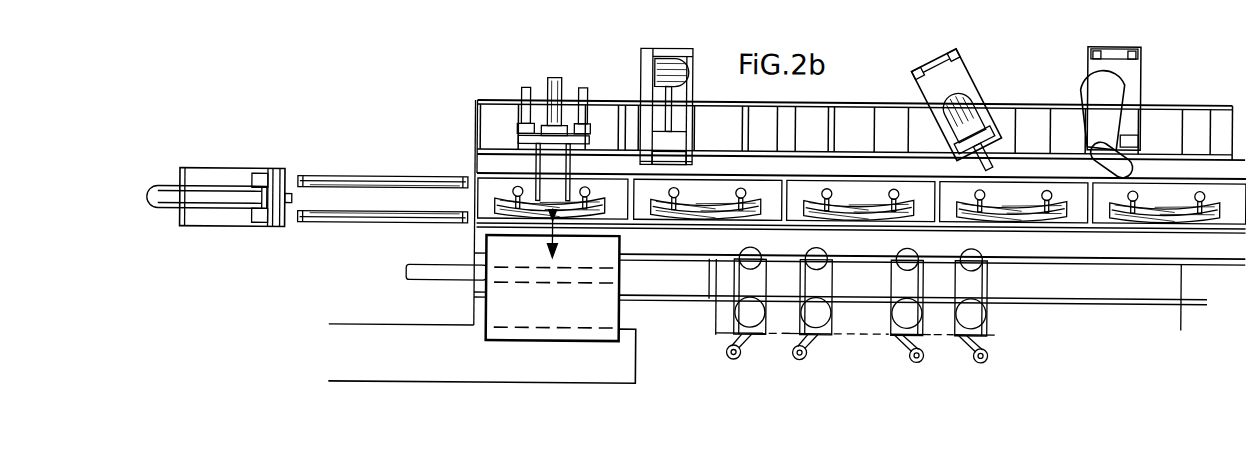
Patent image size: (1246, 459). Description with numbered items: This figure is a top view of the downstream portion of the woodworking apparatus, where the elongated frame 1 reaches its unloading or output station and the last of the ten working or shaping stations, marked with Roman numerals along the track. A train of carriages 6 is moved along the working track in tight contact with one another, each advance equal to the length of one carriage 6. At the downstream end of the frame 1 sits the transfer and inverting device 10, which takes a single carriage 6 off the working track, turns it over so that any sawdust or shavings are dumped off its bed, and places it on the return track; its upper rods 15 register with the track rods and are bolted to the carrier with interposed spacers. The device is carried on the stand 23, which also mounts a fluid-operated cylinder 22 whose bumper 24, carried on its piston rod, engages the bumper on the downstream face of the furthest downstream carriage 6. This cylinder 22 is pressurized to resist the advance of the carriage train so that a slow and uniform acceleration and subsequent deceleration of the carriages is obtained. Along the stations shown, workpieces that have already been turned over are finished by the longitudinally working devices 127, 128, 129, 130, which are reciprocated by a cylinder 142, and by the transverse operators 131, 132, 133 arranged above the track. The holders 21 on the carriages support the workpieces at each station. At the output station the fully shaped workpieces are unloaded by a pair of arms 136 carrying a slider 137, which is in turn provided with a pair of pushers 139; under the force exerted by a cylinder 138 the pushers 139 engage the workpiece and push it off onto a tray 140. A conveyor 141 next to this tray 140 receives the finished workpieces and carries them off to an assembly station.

The elongated frame 1 is at (753, 120).
The carriage 6 is at (849, 178).
The transfer and inverting device 10 is at (355, 197).
The upper rods 15 is at (402, 218).
The workpiece holder bar 21 is at (713, 205).
The fluid-operated cylinder 22 is at (173, 200).
The stand 23 is at (218, 170).
The bumper 24 is at (274, 150).
The longitudinally working device 127 is at (965, 285).
The longitudinally working device 128 is at (913, 285).
The longitudinally working device 129 is at (819, 285).
The longitudinally working device 130 is at (749, 285).
The transverse operator 131 is at (1125, 70).
The transverse operator 132 is at (960, 75).
The transverse operator 133 is at (660, 105).
The arms 136 is at (548, 90).
The slider 137 is at (537, 140).
The cylinder 138 is at (560, 80).
The pushers 139 is at (531, 160).
The tray 140 is at (595, 293).
The conveyor 141 is at (622, 365).
The cylinder 142 is at (432, 276).